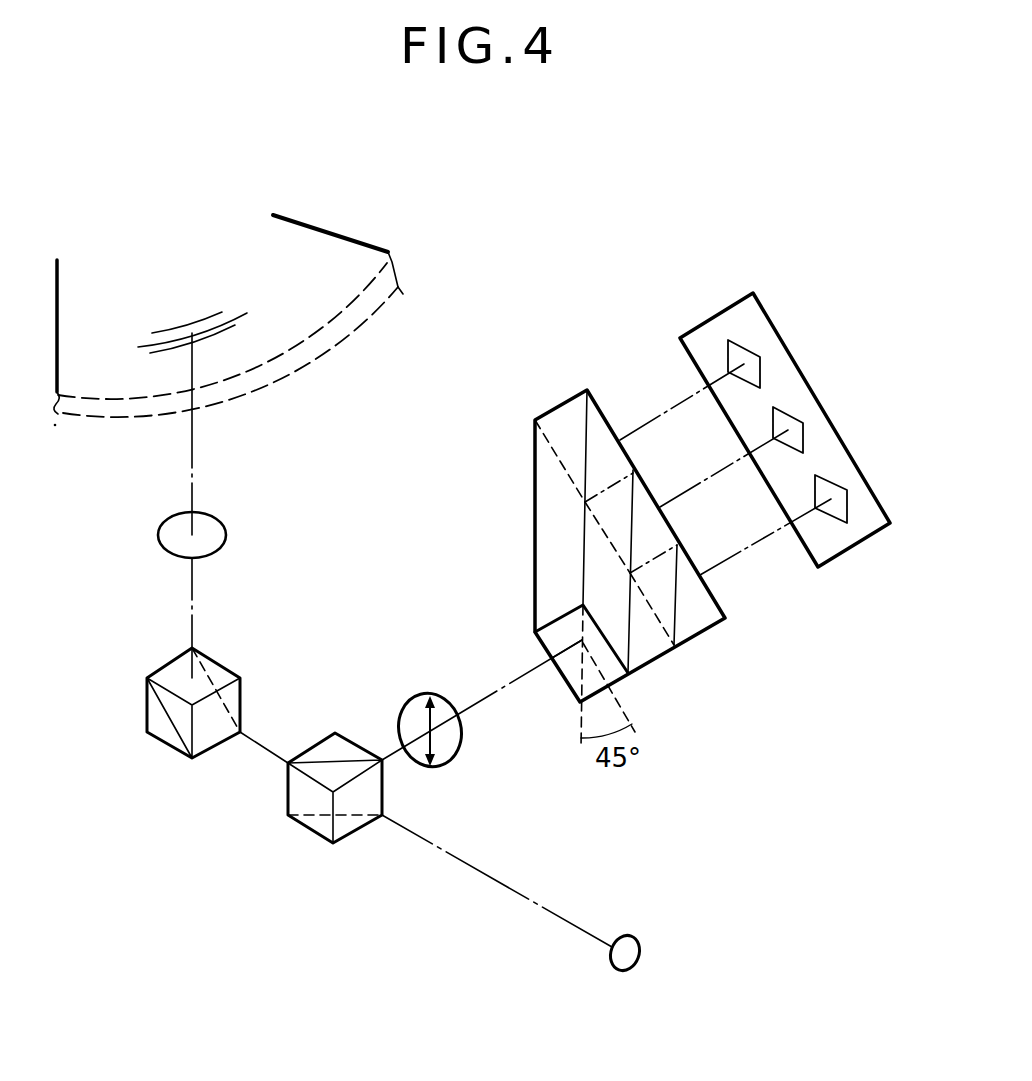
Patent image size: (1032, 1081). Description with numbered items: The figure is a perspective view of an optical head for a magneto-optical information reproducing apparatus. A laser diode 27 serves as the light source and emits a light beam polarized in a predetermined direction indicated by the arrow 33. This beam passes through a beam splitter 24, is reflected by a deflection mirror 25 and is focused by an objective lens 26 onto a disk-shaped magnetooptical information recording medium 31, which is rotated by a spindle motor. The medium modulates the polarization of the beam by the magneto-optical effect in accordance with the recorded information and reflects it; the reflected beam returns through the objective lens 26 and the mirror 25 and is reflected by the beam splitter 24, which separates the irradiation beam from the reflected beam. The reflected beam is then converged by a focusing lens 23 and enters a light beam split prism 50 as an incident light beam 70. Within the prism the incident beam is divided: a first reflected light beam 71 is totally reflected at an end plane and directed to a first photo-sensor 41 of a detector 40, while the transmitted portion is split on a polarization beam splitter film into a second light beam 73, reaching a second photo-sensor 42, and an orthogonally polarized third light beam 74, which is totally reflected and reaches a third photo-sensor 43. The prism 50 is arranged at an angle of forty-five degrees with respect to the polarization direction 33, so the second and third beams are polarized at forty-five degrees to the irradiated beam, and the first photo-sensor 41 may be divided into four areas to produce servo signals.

The magnetooptical information recording medium 31 is at (386, 250).
The objective lens 26 is at (216, 551).
The deflection mirror 25 is at (163, 743).
The beam splitter 24 is at (315, 832).
The focusing lens 23 is at (437, 723).
The arrow indicating predetermined direction of polarization 33 is at (447, 737).
The laser diode 27 is at (615, 972).
The incident light beam 70 is at (515, 683).
The light beam split prism 50 is at (550, 412).
The third light beam 74 is at (692, 395).
The first reflected light beam 71 is at (732, 467).
The second light beam 73 is at (778, 531).
The detector 40 is at (695, 328).
The third photo-sensor 43 is at (752, 368).
The first photo-sensor 41 is at (788, 428).
The second photo-sensor 42 is at (833, 508).